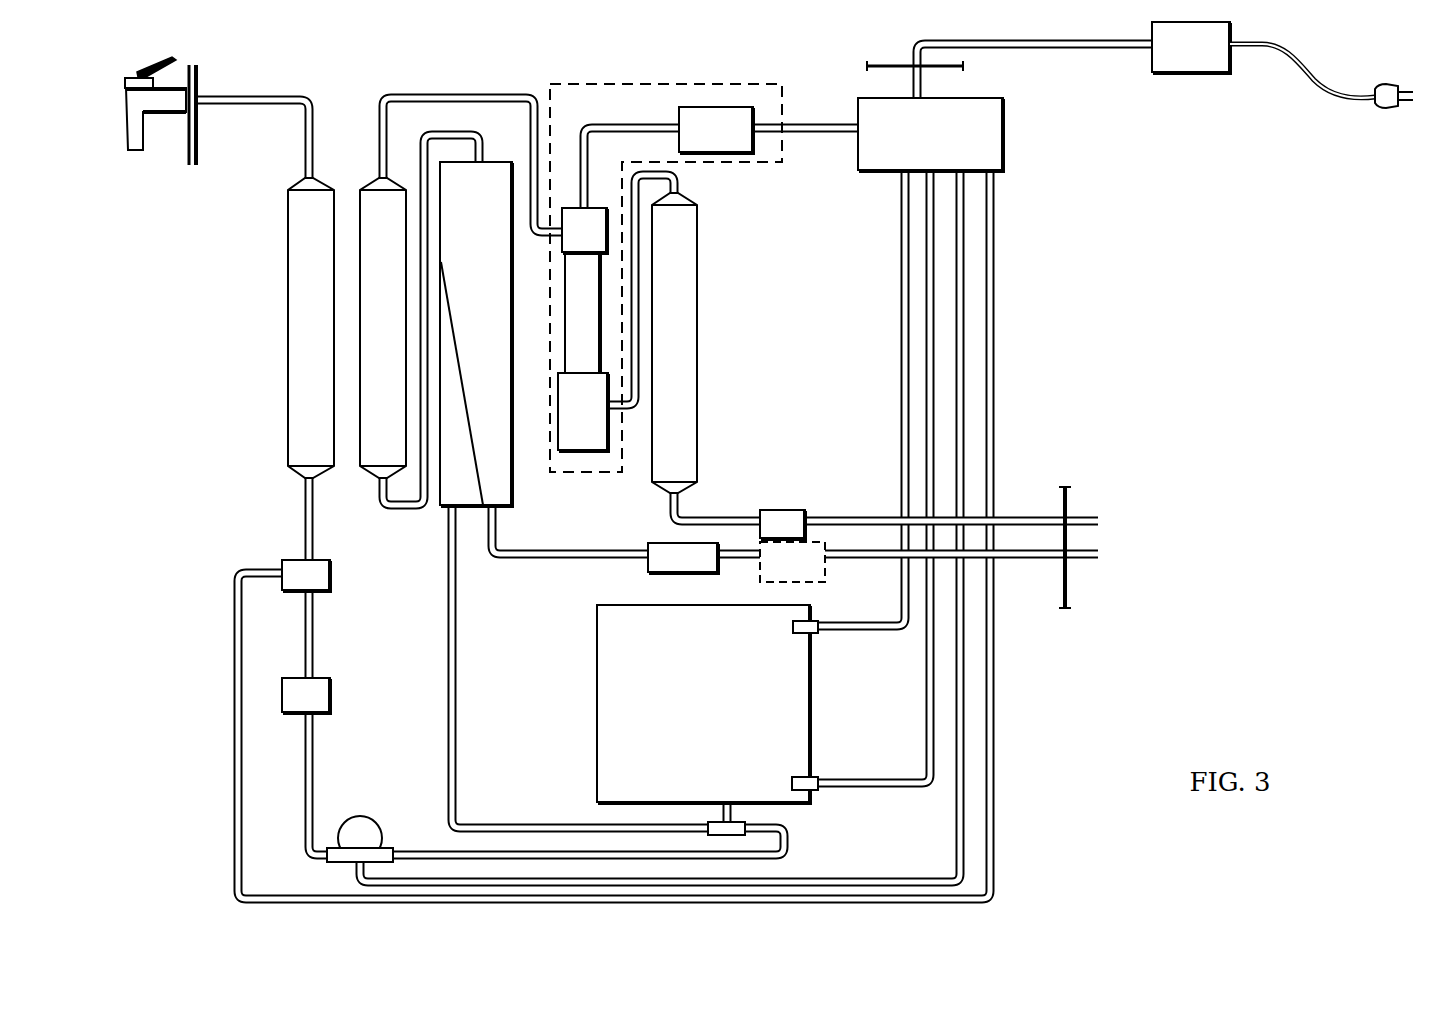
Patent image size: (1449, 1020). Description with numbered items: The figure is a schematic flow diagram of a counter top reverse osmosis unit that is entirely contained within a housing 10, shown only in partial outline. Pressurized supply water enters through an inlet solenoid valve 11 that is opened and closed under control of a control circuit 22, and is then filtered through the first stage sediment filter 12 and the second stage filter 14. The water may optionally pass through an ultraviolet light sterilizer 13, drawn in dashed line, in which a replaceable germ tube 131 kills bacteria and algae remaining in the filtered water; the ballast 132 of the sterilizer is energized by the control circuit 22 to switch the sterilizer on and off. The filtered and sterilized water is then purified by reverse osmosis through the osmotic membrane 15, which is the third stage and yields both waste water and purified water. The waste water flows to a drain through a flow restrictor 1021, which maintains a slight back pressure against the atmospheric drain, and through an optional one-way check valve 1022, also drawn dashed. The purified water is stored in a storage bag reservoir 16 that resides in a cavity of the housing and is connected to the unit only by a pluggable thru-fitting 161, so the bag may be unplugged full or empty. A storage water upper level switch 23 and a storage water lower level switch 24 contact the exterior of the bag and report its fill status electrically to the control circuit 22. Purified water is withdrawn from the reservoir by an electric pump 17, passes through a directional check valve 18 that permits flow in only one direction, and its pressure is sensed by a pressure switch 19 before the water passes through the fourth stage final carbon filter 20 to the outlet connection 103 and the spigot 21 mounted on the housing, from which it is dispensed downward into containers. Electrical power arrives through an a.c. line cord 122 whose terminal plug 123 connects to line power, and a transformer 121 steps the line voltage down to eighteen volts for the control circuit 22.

The housing 10 is at (200, 156).
The spigot 21 is at (133, 118).
The outlet connection 103 is at (230, 97).
The fourth stage final carbon filter 20 is at (294, 334).
The second stage filter 14 is at (368, 334).
The osmotic membrane 15 is at (460, 309).
The ultraviolet light sterilizer 13 is at (676, 84).
The germ tube 131 is at (578, 354).
The ballast 132 is at (695, 147).
The first stage sediment filter 12 is at (657, 396).
The inlet solenoid valve 11 is at (767, 535).
The flow restrictor 1021 is at (655, 570).
The one-way check valve 1022 is at (764, 578).
The control circuit 22 is at (912, 152).
The transformer 121 is at (1170, 64).
The a.c. line cord 122 is at (1291, 62).
The terminal plug 123 is at (1387, 103).
The pressure switch 19 is at (291, 588).
The directional check valve 18 is at (291, 709).
The electric pump 17 is at (345, 851).
The storage bag reservoir 16 is at (654, 684).
The storage water upper level switch 23 is at (793, 627).
The storage water lower level switch 24 is at (792, 782).
The pluggable thru-fitting 161 is at (747, 824).